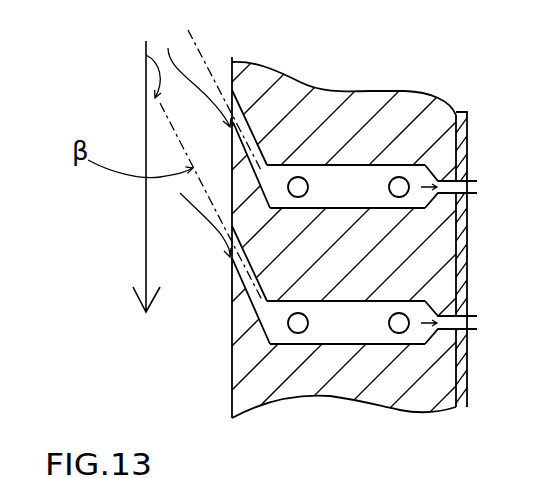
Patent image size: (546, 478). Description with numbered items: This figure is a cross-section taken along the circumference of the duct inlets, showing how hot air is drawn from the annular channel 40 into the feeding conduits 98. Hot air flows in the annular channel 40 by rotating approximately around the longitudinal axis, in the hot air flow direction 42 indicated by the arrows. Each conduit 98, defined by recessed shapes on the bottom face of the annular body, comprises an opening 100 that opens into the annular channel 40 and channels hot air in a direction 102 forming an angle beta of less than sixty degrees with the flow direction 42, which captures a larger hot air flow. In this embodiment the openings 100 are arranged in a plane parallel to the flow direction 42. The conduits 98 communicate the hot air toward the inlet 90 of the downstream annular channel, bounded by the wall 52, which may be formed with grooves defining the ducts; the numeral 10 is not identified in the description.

The fuel injector assembly 10 is at (545, 364).
The annular channel 40 is at (216, 110).
The hot air flow direction 42 is at (146, 233).
The wall 52 is at (463, 245).
The inlet 90 is at (473, 187).
The conduit 98 is at (358, 180).
The opening 100 is at (232, 90).
The direction 102 is at (197, 40).